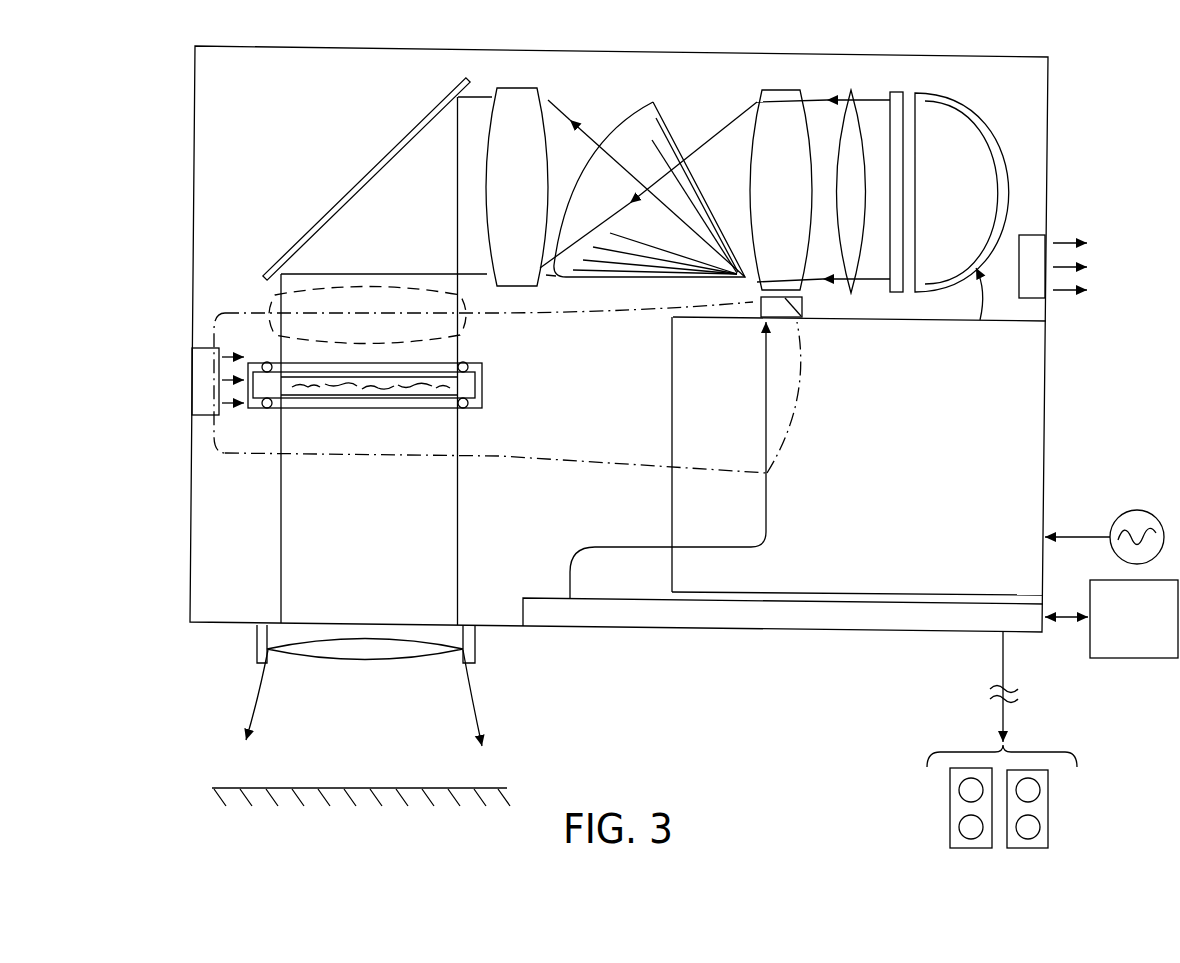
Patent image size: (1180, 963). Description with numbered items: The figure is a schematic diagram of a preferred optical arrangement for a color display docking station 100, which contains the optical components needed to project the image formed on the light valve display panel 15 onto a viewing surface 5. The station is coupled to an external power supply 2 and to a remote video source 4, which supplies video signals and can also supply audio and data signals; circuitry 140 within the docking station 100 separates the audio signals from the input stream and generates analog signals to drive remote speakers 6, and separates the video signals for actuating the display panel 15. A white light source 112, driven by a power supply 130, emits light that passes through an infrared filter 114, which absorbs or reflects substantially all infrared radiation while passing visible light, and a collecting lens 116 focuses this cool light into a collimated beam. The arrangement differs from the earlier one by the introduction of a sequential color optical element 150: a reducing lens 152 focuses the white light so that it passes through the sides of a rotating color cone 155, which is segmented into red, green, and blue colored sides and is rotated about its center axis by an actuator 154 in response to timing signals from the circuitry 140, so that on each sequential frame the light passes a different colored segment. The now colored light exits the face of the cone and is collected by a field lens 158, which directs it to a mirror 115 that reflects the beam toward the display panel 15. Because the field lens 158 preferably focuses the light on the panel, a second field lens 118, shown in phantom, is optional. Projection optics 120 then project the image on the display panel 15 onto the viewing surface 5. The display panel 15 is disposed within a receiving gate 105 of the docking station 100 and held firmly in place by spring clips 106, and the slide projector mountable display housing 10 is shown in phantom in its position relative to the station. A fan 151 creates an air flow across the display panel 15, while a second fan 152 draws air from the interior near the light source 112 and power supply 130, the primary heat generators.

The docking station 100 is at (1064, 81).
The sequential color optical element 150 is at (700, 96).
The collecting lens 116 is at (850, 94).
The infrared filter 114 is at (902, 92).
The mirror 115 is at (362, 182).
The field lens 158 is at (535, 188).
The reducing lens 152 is at (800, 192).
The rotating color cone 155 is at (672, 240).
The white light source 112 is at (971, 201).
The field lens 118 is at (268, 298).
The fan 151 is at (192, 396).
The light valve display panel 15 is at (432, 388).
The receiving gate 105 is at (485, 396).
The spring clips 106 is at (460, 410).
The display housing 10 is at (222, 452).
The actuator 154 is at (810, 306).
The power supply 130 is at (922, 478).
The external power supply 2 is at (1138, 510).
The remote video source 4 is at (1148, 645).
The circuitry 140 is at (616, 623).
The projection optics 120 is at (361, 685).
The viewing surface 5 is at (481, 789).
The remote speakers 6 is at (938, 800).